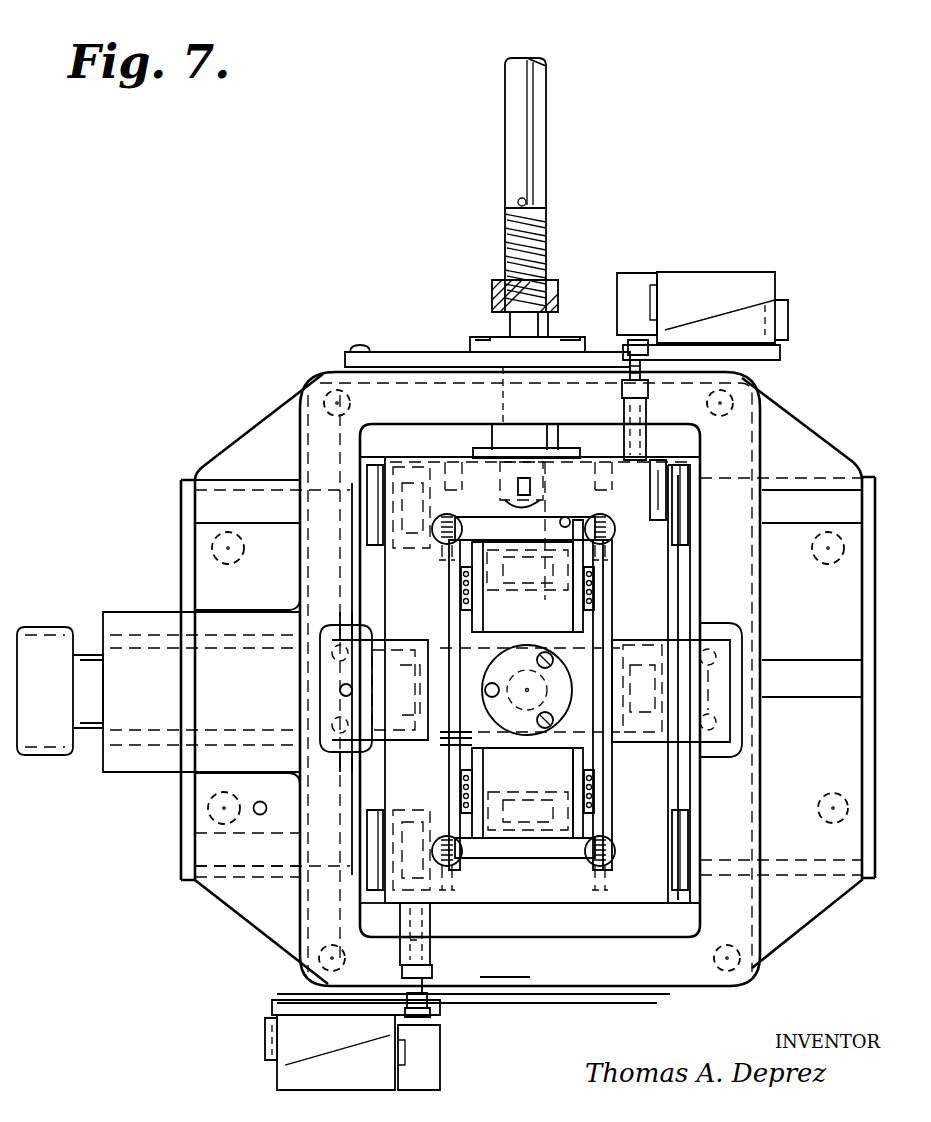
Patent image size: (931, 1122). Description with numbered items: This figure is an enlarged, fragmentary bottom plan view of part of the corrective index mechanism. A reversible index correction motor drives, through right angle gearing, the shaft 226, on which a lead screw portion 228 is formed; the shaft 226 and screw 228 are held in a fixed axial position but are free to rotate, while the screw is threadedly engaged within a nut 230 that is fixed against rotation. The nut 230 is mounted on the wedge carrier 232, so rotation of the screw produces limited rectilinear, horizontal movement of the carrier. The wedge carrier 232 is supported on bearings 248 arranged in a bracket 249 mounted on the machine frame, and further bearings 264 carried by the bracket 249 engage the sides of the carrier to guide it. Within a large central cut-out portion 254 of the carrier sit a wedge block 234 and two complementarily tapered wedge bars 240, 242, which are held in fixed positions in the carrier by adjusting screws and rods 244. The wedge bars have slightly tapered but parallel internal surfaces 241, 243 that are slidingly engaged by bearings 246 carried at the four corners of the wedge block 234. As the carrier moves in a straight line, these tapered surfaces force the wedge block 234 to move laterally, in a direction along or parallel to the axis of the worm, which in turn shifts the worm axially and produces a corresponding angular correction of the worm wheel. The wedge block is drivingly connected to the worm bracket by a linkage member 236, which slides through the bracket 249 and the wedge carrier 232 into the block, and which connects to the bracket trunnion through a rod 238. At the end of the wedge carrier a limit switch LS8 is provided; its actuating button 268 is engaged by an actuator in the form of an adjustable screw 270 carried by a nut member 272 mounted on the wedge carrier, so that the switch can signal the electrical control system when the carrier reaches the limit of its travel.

The shaft 226 is at (540, 164).
The lead screw portion 228 is at (549, 245).
The nut 230 is at (556, 296).
The wedge carrier 232 is at (405, 440).
The wedge block 234 is at (550, 636).
The linkage member 236 is at (140, 640).
The rod 238 is at (43, 630).
The wedge bar 240 is at (603, 588).
The internal surface 241 is at (593, 625).
The wedge bar 242 is at (450, 595).
The internal surface 243 is at (465, 750).
The adjusting screws and rods 244 is at (466, 530).
The bearings 246 is at (588, 590).
The bearings 248 is at (398, 462).
The bracket 249 is at (252, 442).
The central cut-out portion 254 is at (566, 518).
The bearings 264 is at (367, 490).
The actuating button 268 is at (620, 340).
The adjustable screw 270 is at (622, 385).
The nut member 272 is at (667, 478).
The limit switch LS8 is at (765, 250).